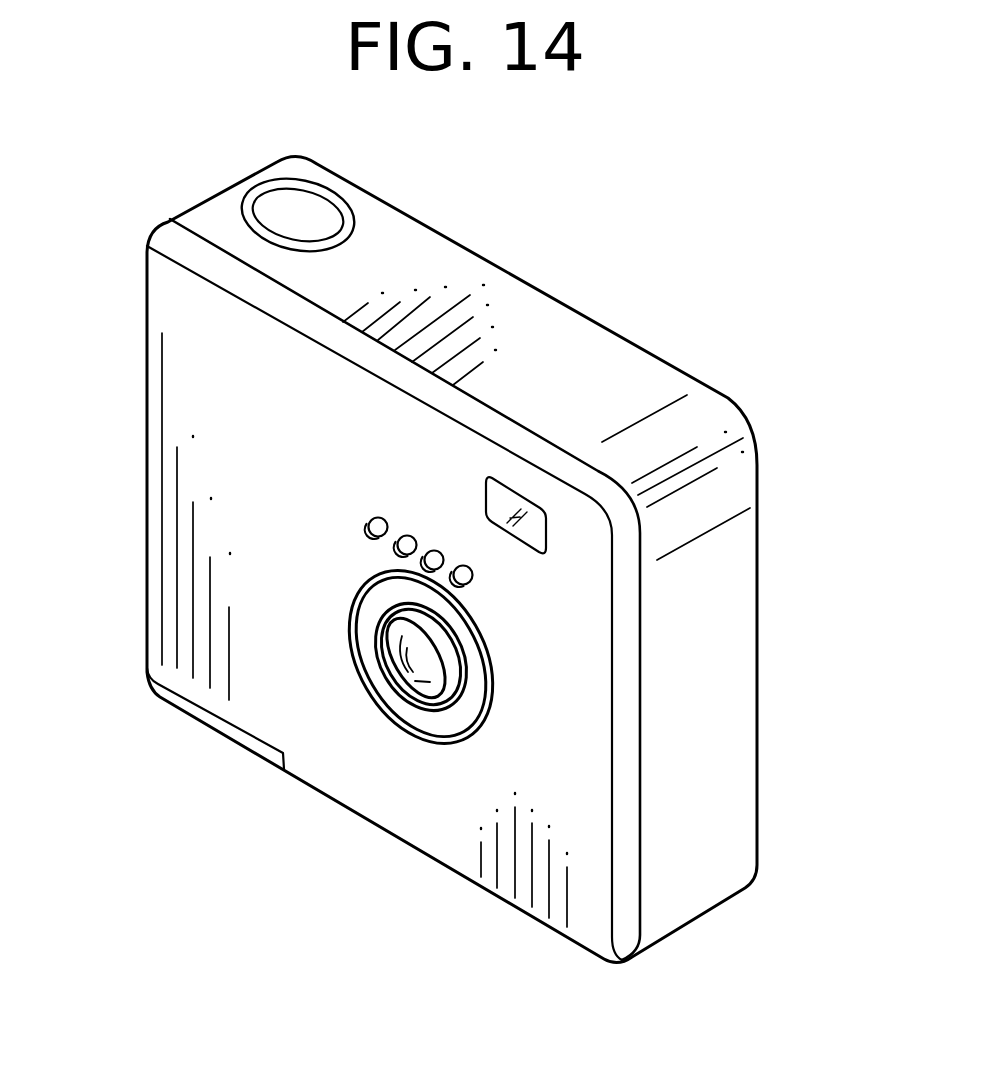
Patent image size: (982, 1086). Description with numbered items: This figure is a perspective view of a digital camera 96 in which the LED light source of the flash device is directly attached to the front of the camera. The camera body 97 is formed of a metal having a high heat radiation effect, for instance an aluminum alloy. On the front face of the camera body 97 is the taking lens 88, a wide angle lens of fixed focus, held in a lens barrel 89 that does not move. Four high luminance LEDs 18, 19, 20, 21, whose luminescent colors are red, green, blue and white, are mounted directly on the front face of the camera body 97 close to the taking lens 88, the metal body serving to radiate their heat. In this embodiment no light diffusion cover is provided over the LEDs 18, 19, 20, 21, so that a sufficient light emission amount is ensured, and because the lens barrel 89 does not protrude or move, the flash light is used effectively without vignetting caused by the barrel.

The digital camera 96 is at (520, 270).
The camera body 97 is at (147, 550).
The taking lens 88 is at (403, 655).
The lens barrel 89 is at (398, 713).
The LED 18 is at (380, 537).
The LED 19 is at (409, 554).
The LED 20 is at (436, 569).
The LED 21 is at (466, 584).